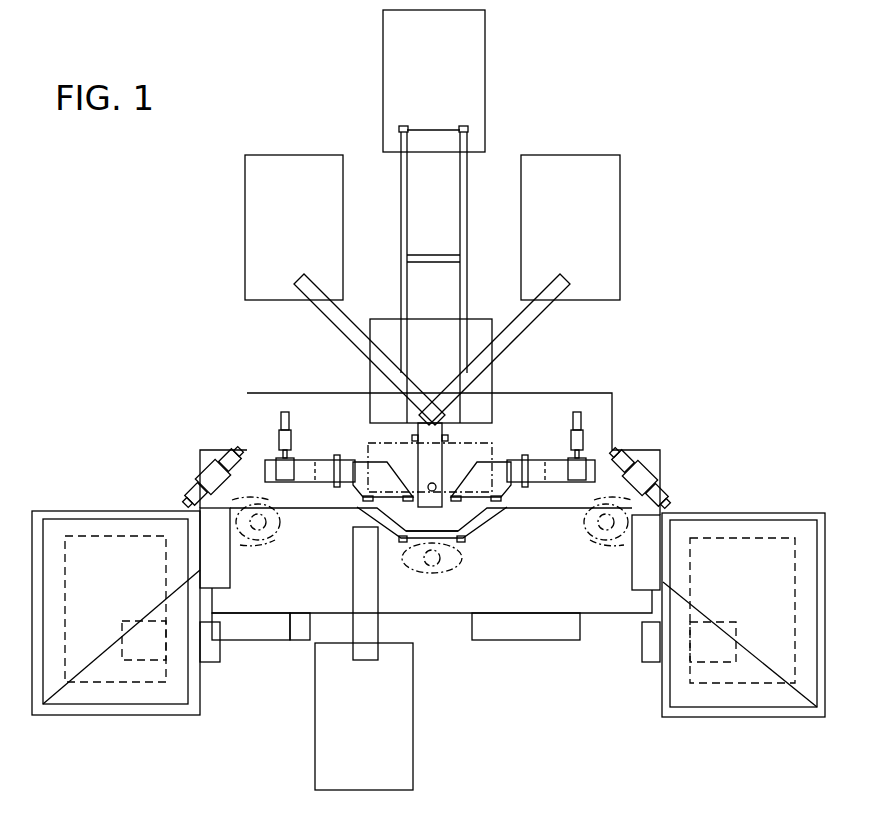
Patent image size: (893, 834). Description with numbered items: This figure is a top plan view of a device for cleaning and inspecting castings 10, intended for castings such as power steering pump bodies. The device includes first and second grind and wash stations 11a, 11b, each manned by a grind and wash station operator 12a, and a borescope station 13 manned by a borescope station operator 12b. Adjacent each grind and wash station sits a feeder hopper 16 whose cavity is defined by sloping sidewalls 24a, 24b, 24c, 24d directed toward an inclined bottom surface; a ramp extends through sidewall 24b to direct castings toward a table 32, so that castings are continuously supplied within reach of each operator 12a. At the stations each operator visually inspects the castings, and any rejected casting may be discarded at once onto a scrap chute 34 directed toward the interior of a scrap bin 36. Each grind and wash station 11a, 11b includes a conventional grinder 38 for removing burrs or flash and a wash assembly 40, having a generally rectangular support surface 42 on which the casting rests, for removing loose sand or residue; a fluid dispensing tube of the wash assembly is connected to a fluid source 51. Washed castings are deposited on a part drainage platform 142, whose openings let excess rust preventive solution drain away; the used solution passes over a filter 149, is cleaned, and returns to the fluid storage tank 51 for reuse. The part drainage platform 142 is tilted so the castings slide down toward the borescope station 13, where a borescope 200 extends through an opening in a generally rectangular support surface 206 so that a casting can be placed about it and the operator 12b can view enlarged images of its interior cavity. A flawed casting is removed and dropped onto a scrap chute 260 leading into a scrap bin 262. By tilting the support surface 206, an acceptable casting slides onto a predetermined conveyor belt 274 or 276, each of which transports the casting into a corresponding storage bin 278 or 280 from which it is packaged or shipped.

The device for cleaning and inspecting castings 10 is at (226, 222).
The first grind and wash station 11a is at (283, 600).
The second grind and wash station 11b is at (615, 630).
The grind and wash station operator 12a is at (272, 508).
The borescope station operator 12b is at (447, 565).
The borescope station 13 is at (484, 542).
The feeder hopper 16 is at (79, 492).
The sloping sidewall 24a is at (146, 697).
The sloping sidewall 24b is at (182, 670).
The sloping sidewall 24c is at (108, 530).
The sloping sidewall 24d is at (53, 551).
The table 32 is at (226, 572).
The scrap chute 34 is at (210, 660).
The scrap bin 36 is at (725, 687).
The grinder 38 is at (210, 478).
The wash assembly 40 is at (264, 421).
The support surface 42 is at (309, 470).
The fluid source 51 is at (382, 325).
The part drainage platform 142 is at (378, 468).
The filter 149 is at (470, 290).
The borescope 200 is at (435, 492).
The support surface 206 is at (425, 462).
The scrap chute 260 is at (367, 588).
The scrap bin 262 is at (400, 705).
The conveyor belt 274 is at (348, 318).
The conveyor belt 276 is at (510, 333).
The storage bin 278 is at (290, 152).
The storage bin 280 is at (578, 153).